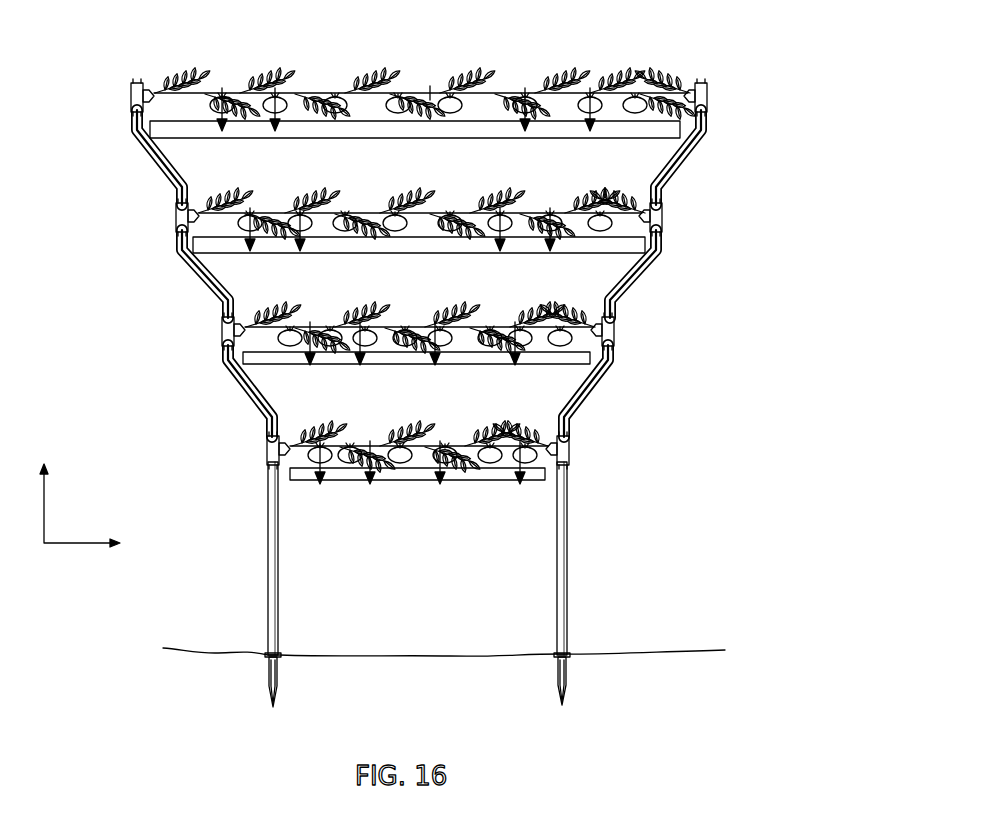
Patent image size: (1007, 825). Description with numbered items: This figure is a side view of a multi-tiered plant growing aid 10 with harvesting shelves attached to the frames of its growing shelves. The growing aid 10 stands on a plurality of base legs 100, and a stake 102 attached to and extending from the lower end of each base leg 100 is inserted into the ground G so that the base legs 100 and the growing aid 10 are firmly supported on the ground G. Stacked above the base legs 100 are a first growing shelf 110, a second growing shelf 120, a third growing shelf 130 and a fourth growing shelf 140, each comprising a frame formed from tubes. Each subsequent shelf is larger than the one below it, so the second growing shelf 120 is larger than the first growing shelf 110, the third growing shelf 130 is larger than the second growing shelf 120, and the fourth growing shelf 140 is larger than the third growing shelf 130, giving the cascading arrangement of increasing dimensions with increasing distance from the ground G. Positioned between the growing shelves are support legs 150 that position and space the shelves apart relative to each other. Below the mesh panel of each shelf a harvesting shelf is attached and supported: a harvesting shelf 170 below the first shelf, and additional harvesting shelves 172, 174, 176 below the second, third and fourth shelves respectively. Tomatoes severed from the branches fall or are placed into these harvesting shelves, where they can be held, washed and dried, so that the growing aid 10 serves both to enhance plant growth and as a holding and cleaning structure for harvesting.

The multi-tiered plant growing aid 10 is at (765, 47).
The base leg 100 is at (268, 585).
The stake 102 is at (279, 685).
The first growing shelf 110 is at (567, 573).
The second growing shelf 120 is at (643, 340).
The third growing shelf 130 is at (691, 215).
The fourth growing shelf 140 is at (745, 108).
The support leg 150 is at (163, 179).
The harvesting shelf 170 is at (431, 488).
The harvesting shelf 172 is at (414, 370).
The harvesting shelf 174 is at (441, 260).
The harvesting shelf 176 is at (450, 140).
The ground G is at (694, 642).